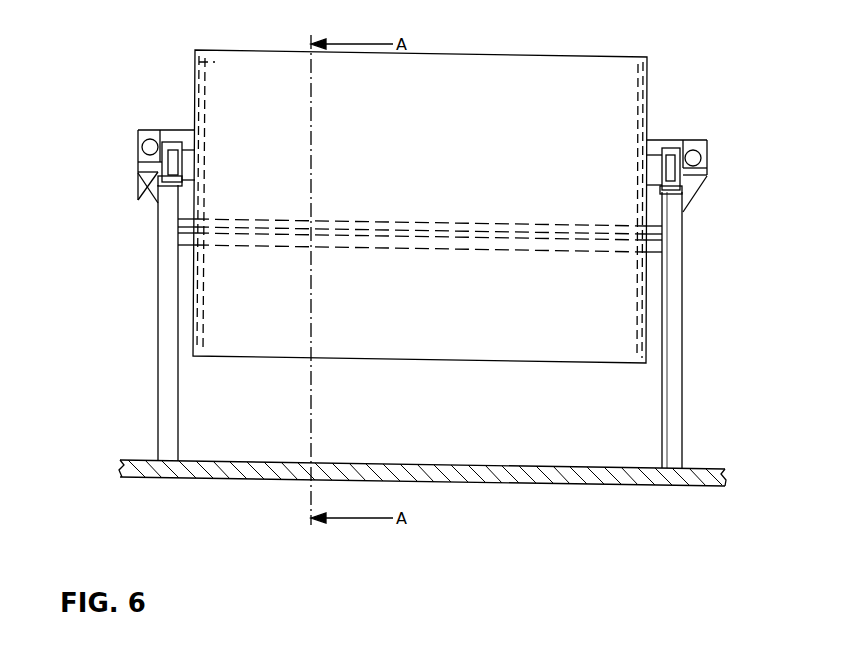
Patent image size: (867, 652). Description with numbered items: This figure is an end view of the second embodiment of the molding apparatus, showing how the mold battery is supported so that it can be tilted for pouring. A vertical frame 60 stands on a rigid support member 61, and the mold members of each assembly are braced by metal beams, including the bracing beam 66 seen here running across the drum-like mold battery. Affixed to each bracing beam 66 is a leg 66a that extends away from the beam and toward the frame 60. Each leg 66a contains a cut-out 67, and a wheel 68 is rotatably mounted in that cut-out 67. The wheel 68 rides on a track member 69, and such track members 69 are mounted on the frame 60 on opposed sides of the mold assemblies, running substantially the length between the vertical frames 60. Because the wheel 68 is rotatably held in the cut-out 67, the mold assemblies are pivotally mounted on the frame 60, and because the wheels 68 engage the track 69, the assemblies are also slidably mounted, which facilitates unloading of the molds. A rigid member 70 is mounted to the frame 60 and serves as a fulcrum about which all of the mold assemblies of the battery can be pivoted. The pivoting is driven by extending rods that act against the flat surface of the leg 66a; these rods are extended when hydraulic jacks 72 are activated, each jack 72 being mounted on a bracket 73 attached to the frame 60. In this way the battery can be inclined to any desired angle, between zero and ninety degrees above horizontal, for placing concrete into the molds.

The vertical frame 60 is at (160, 435).
The rigid support member 61 is at (522, 478).
The metal beam 66 is at (203, 58).
The leg 66a is at (148, 131).
The cut-out 67 is at (173, 143).
The wheel 68 is at (170, 148).
The track member 69 is at (167, 178).
The rigid member 70 is at (383, 235).
The hydraulic jack 72 is at (143, 151).
The bracket 73 is at (160, 185).